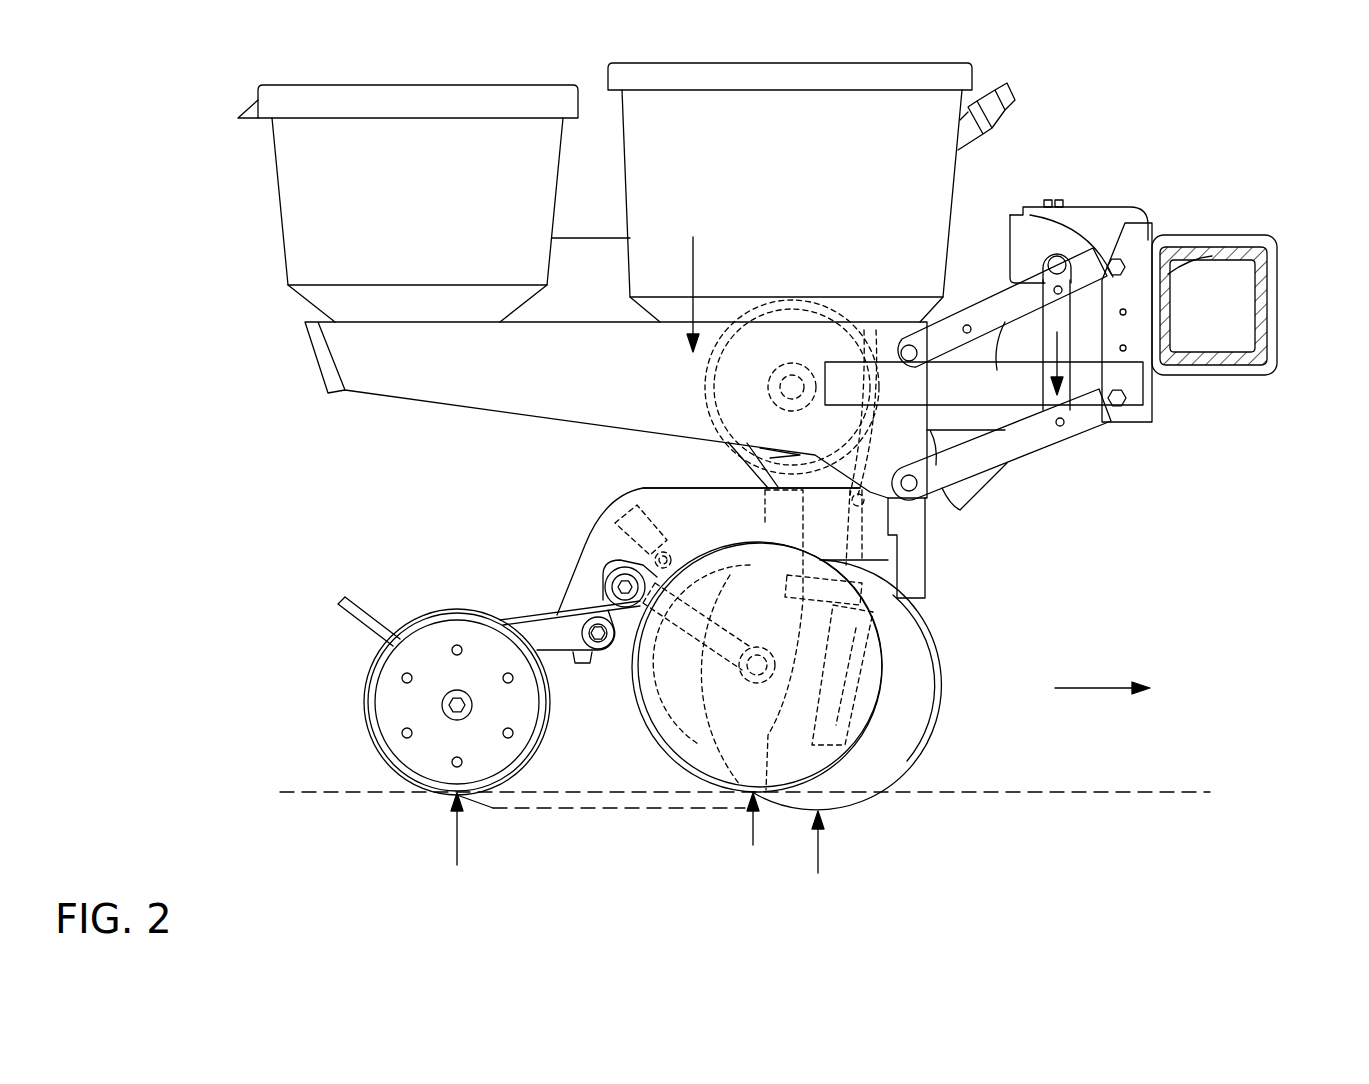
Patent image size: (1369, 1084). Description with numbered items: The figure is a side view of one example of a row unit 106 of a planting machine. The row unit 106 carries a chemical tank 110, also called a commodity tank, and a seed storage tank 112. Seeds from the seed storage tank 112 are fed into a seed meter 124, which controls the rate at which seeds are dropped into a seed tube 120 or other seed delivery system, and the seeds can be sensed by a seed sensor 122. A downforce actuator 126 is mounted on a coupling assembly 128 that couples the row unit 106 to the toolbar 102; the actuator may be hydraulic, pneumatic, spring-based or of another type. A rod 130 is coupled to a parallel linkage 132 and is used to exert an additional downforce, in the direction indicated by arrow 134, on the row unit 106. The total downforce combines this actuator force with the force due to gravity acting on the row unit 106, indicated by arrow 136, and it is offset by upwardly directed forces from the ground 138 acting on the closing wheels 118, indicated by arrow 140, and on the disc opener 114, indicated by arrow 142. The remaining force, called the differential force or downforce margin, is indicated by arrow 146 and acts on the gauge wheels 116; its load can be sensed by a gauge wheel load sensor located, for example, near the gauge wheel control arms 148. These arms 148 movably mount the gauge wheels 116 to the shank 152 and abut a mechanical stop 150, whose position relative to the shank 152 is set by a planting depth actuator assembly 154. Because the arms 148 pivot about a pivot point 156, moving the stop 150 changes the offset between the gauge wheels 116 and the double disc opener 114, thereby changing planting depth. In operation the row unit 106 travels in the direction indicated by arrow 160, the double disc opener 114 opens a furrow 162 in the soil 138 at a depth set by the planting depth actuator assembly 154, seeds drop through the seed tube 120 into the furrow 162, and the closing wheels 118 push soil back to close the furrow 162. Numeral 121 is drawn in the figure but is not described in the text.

The toolbar 102 is at (1265, 297).
The row unit 106 is at (1232, 122).
The chemical tank 110 is at (393, 212).
The seed storage tank 112 is at (775, 156).
The disc opener 114 is at (917, 760).
The gauge wheels 116 is at (697, 778).
The closing wheels 118 is at (400, 780).
The seed tube 120 is at (837, 638).
The furrow bottom 121 is at (767, 745).
The seed sensor 122 is at (873, 622).
The seed meter 124 is at (867, 340).
The downforce actuator 126 is at (1063, 237).
The coupling assembly 128 is at (1157, 392).
The rod 130 is at (1200, 367).
The parallel linkage 132 is at (1028, 425).
The arrow (actuator downforce direction) 134 is at (1118, 405).
The arrow (gravity force) 136 is at (693, 280).
The ground 138 is at (318, 790).
The arrow (closing wheel ground force) 140 is at (457, 848).
The arrow (disc opener ground force) 142 is at (818, 850).
The arrow (differential force) 146 is at (753, 839).
The gauge wheel control arms 148 is at (650, 712).
The mechanical stop 150 is at (690, 596).
The shank 152 is at (727, 492).
The planting depth actuator assembly 154 is at (615, 545).
The pivot point 156 is at (600, 558).
The arrow (direction of travel) 160 is at (1102, 709).
The furrow 162 is at (572, 805).